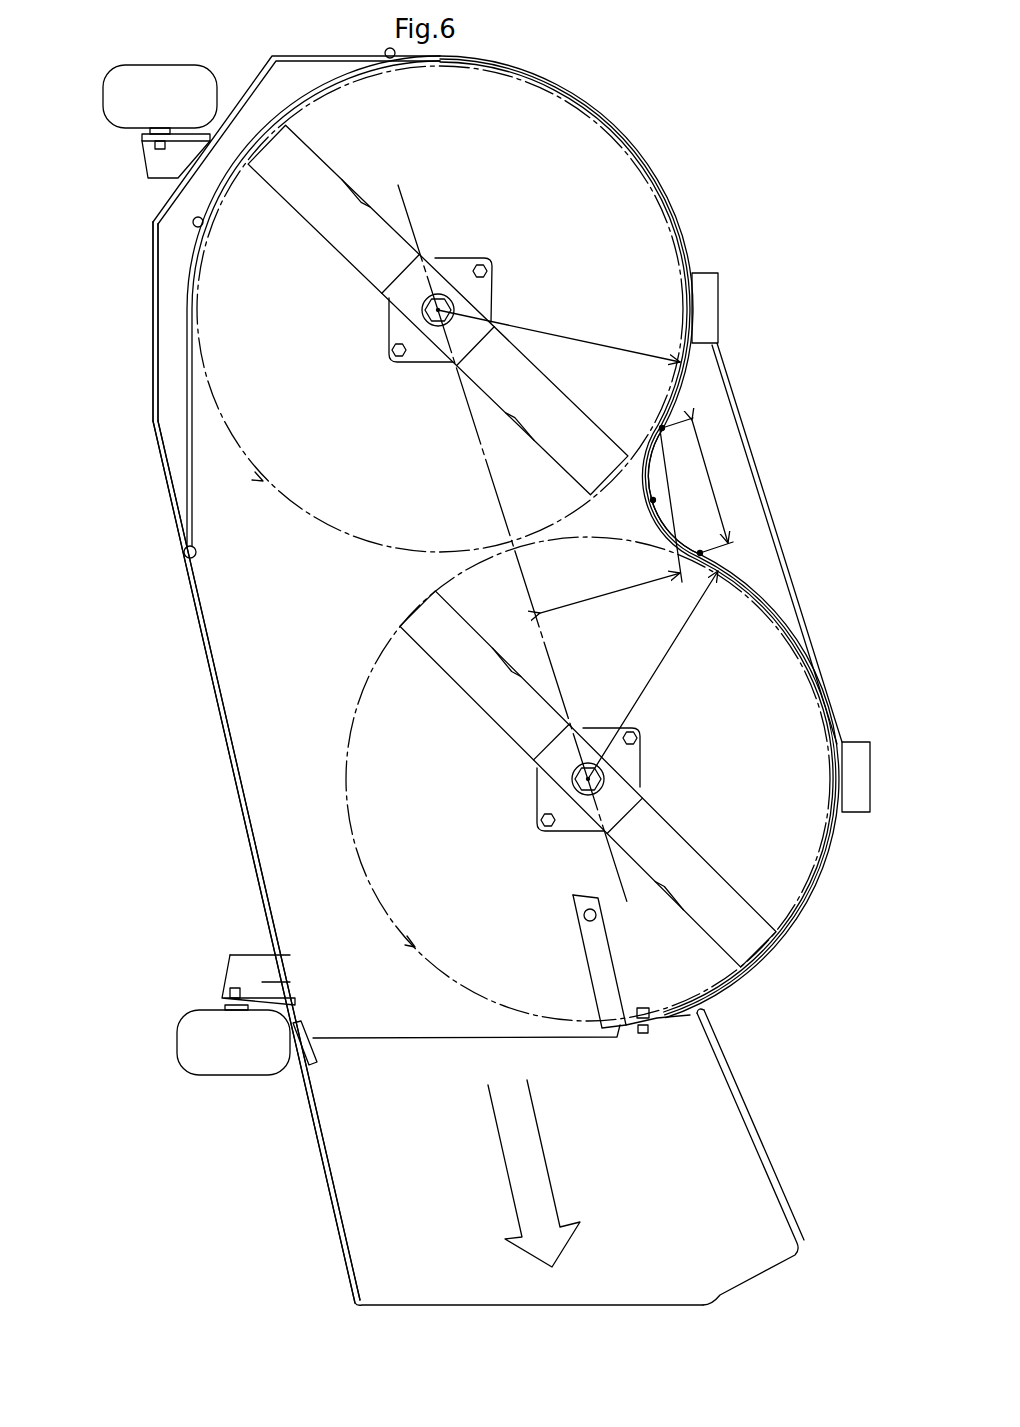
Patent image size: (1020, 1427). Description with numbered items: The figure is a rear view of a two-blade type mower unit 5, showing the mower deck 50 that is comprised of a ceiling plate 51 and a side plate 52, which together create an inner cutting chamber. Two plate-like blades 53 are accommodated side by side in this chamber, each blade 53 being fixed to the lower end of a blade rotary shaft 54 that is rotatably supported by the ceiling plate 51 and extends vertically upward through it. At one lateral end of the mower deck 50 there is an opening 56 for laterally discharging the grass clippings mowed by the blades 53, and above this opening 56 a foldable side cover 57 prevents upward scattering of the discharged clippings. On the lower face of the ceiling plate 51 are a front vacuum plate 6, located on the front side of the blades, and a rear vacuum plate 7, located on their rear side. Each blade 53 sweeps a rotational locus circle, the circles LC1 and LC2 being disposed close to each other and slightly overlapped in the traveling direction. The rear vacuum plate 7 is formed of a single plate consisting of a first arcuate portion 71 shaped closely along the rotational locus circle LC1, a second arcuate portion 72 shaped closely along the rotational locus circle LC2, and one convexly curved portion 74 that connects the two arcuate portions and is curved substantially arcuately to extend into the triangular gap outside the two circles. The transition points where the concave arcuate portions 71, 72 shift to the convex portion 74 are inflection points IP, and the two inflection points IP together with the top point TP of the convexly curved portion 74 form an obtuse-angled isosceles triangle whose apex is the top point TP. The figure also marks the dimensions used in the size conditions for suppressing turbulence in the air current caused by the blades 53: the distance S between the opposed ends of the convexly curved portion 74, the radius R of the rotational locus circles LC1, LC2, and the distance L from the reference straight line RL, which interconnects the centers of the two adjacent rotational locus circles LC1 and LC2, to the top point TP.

The mower unit 5 is at (175, 760).
The front vacuum plate 6 is at (186, 372).
The rear vacuum plate 7 is at (680, 394).
The mower deck 50 is at (198, 603).
The ceiling plate 51 is at (235, 665).
The side plate 52 is at (258, 822).
The blade 53 is at (352, 252).
The blade rotary shaft 54 is at (430, 312).
The opening 56 is at (368, 1047).
The side cover 57 is at (738, 1095).
The first arcuate portion 71 is at (693, 357).
The second arcuate portion 72 is at (787, 618).
The convexly curved portion 74 is at (645, 487).
The radius of the rotational locus circles R is at (578, 544).
The inflection point IP is at (660, 427).
The top point TP is at (654, 500).
The distance between the opposed ends of the convexly curved portion S is at (697, 485).
The distance from the reference straight line to the top point L is at (611, 521).
The rotational locus circle LC1 is at (333, 535).
The rotational locus circle LC2 is at (343, 778).
The reference straight line RL is at (490, 493).